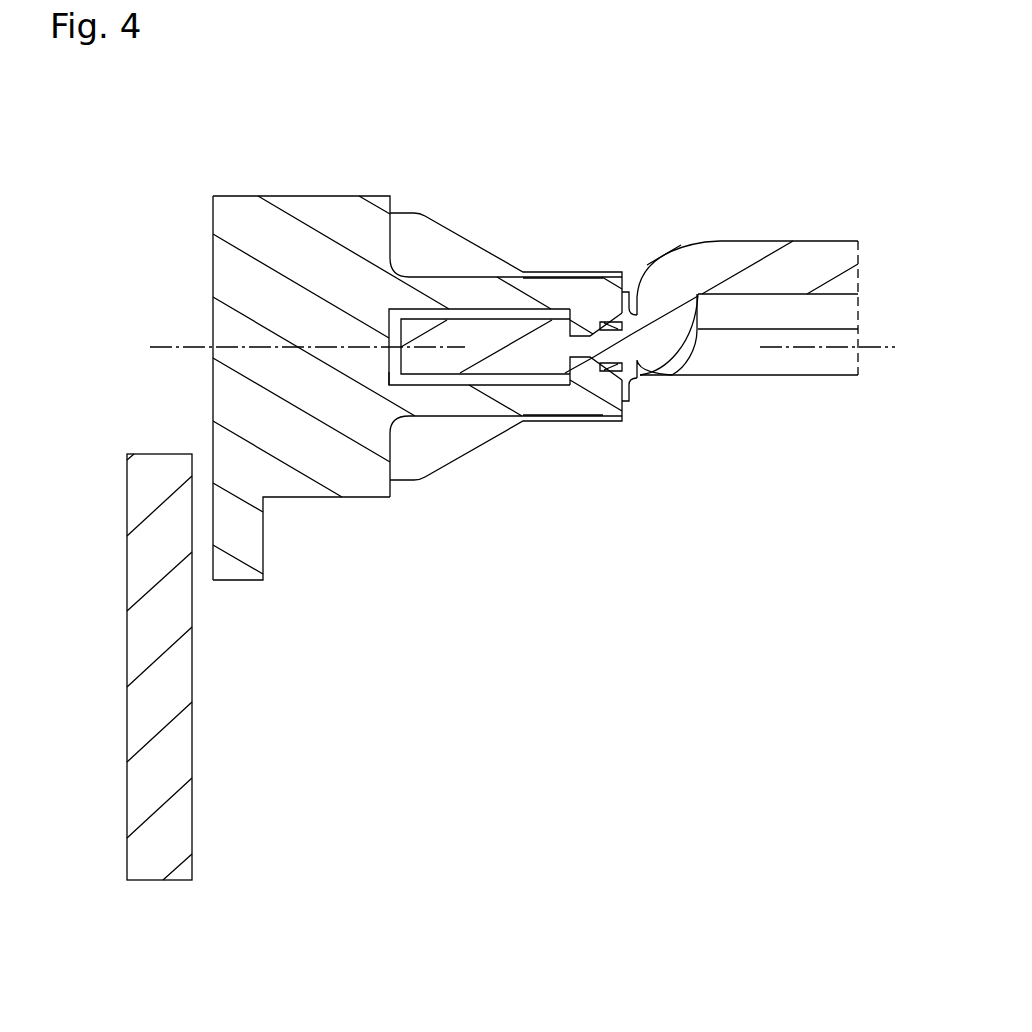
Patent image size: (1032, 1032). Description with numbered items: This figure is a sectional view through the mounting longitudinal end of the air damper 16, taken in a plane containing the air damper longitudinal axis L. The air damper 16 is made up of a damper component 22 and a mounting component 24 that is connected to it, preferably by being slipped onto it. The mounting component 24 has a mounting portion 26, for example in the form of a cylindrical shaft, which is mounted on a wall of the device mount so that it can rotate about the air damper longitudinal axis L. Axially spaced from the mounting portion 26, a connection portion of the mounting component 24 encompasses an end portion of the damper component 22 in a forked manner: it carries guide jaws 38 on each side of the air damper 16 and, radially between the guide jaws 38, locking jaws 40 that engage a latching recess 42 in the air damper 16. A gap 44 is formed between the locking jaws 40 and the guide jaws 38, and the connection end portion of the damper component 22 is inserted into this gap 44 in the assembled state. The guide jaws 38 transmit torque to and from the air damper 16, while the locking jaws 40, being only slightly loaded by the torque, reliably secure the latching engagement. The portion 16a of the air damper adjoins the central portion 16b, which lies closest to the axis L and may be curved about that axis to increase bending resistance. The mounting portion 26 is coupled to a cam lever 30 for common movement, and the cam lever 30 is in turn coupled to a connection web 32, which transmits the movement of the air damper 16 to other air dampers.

The air damper 16 is at (751, 260).
The first shaft portion 16a is at (488, 343).
The central portion 16b is at (725, 357).
The damper component 22 is at (687, 258).
The mounting component 24 is at (452, 121).
The mounting portion 26 is at (314, 225).
The cam lever 30 is at (250, 553).
The connection web 32 is at (178, 760).
The guide jaw 38 is at (598, 268).
The locking jaw 40 is at (546, 294).
The latching recess 42 is at (637, 300).
The gap 44 is at (398, 378).
The air damper longitudinal axis L is at (178, 345).